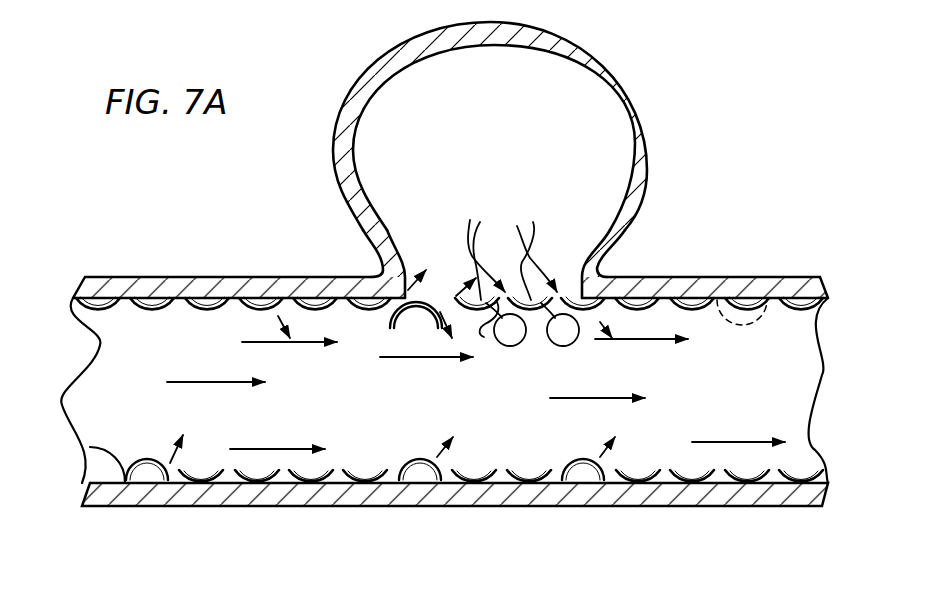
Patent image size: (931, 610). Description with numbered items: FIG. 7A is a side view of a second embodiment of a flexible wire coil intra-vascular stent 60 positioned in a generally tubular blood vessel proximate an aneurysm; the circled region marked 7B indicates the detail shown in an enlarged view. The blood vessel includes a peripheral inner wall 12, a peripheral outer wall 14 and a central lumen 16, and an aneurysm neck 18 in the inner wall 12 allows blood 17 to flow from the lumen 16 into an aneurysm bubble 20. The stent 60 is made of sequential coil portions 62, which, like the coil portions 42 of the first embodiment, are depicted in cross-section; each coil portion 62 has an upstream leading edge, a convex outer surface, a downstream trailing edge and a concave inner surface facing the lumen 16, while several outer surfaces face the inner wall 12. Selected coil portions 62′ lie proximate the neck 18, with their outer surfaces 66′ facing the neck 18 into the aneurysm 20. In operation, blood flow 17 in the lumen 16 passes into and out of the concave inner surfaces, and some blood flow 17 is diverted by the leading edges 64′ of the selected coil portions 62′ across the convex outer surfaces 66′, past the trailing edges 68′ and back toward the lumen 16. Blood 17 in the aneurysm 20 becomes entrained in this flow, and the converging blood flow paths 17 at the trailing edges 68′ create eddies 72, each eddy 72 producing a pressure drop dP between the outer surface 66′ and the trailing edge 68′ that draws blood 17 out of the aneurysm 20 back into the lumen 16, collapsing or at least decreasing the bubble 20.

The flexible wire coil intra-vascular stent 60 is at (222, 248).
The peripheral outer wall 14 is at (186, 277).
The peripheral inner wall 12 is at (90, 447).
The central lumen 16 is at (110, 390).
The blood flow 17 is at (753, 412).
The aneurysm neck 18 is at (558, 257).
The aneurysm bubble 20 is at (572, 100).
The coil portion 42 is at (533, 484).
The coil portion 62 is at (320, 298).
The selected coil portion 62′ is at (398, 273).
The leading edge of selected coil portion 64′ is at (391, 327).
The outer surface of selected coil portion 66′ is at (477, 275).
The trailing edge of selected coil portion 68′ is at (477, 316).
The eddy 72 is at (508, 346).
The detail region of FIG. 7B is at (760, 277).